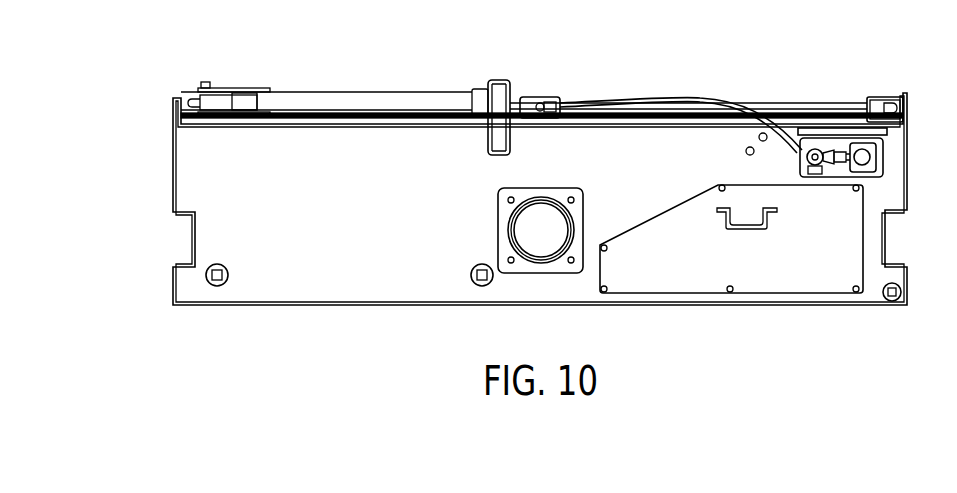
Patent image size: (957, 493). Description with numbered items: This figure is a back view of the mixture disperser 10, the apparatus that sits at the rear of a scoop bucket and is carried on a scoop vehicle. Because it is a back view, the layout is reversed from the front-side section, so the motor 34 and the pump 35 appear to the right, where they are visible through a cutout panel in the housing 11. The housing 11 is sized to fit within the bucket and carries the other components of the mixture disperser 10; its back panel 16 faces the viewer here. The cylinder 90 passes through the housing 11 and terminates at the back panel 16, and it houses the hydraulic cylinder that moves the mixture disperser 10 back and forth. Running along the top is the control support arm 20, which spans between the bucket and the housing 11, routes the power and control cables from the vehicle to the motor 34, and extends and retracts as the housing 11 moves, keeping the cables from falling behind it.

The mixture disperser 10 is at (794, 70).
The housing 11 is at (173, 146).
The back panel 16 is at (371, 293).
The control support arm 20 is at (320, 88).
The motor 34 is at (868, 156).
The pump 35 is at (816, 155).
The cylinder 90 is at (526, 260).